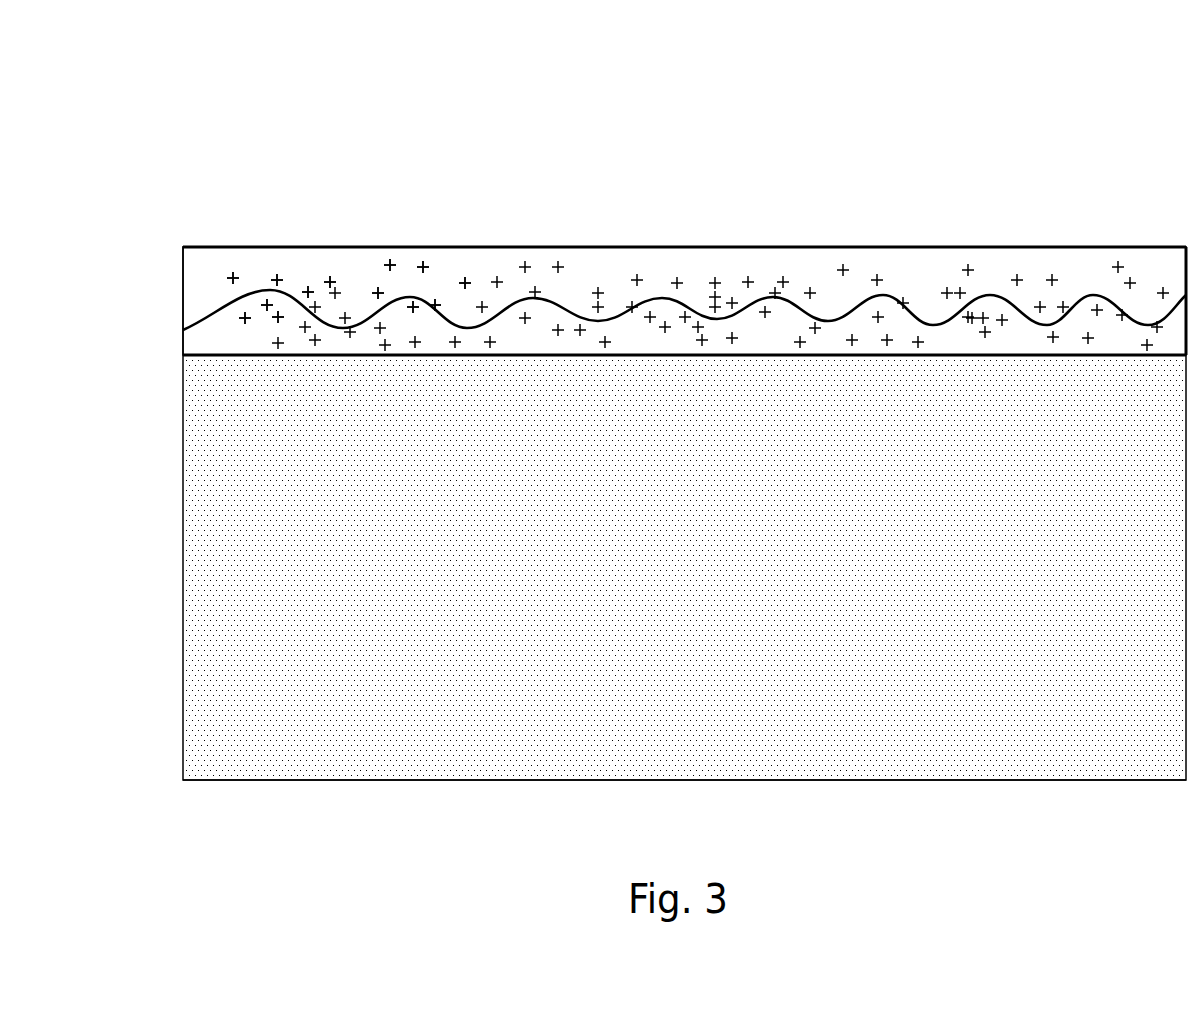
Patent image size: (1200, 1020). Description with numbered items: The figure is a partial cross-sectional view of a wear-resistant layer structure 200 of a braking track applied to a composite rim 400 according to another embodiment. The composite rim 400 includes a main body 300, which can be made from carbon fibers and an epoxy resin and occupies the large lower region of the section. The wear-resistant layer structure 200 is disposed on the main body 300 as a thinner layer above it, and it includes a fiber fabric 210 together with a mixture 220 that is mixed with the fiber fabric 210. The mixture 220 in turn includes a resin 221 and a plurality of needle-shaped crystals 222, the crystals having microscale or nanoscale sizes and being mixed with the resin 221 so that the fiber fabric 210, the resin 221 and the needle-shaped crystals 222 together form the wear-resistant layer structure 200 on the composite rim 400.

The composite rim 400 is at (218, 81).
The main body 300 is at (262, 592).
The wear-resistant layer structure 200 is at (510, 70).
The fiber fabric 210 is at (517, 303).
The mixture 220 is at (405, 130).
The resin 221 is at (288, 262).
The needle-shaped crystals 222 is at (428, 262).